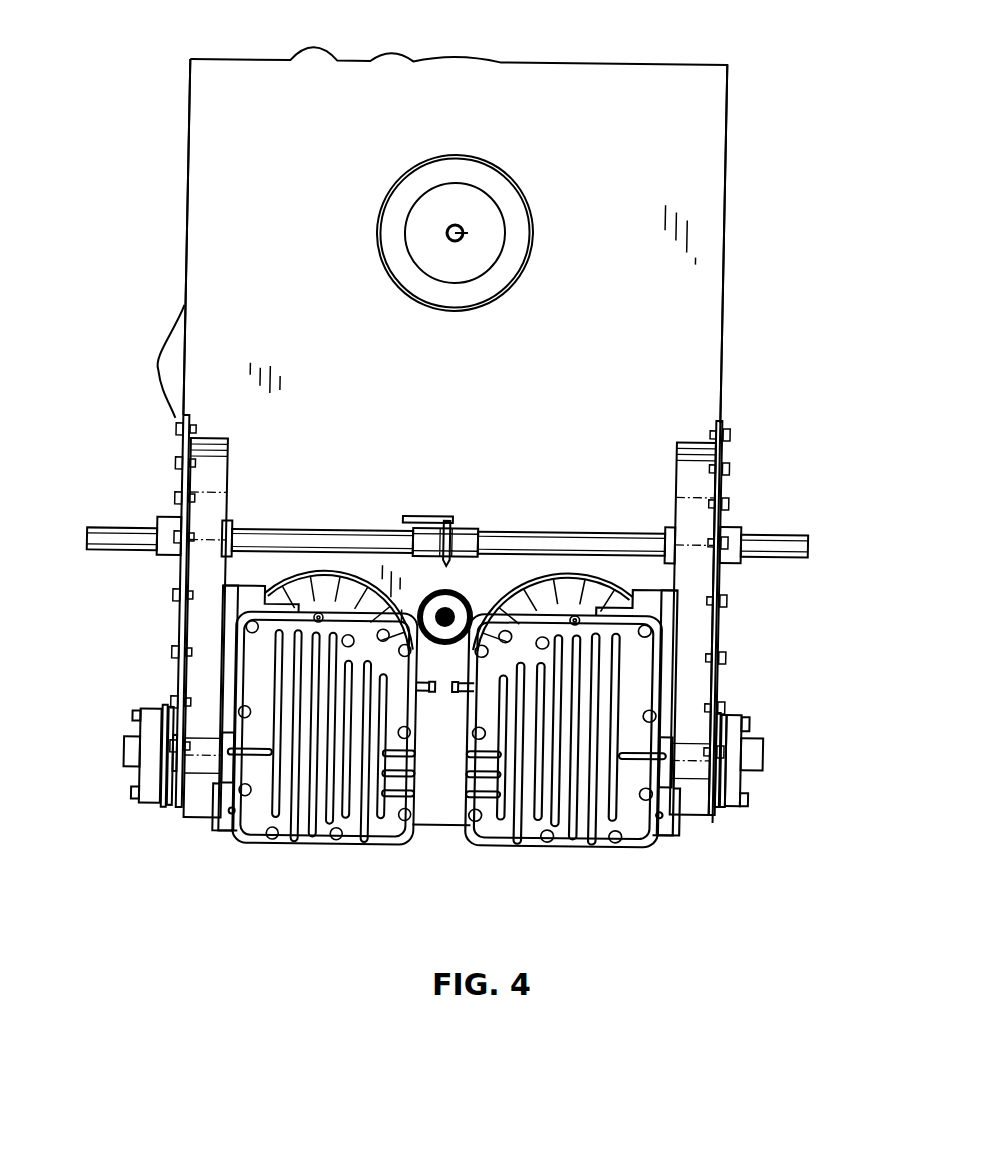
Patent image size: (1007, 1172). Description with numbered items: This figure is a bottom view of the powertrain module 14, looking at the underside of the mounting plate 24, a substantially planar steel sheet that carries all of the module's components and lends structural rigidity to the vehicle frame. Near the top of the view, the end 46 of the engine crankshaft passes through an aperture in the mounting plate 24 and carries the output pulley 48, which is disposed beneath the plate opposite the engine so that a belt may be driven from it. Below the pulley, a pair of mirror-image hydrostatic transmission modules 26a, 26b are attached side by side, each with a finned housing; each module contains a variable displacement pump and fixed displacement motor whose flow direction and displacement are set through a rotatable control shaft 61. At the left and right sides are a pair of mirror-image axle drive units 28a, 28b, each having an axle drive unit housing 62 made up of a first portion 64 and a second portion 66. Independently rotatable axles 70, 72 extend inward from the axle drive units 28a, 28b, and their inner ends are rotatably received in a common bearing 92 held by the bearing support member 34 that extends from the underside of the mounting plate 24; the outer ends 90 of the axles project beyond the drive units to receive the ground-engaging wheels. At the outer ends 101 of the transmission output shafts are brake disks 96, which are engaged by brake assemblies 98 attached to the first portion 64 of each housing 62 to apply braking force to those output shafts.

The powertrain module 14 is at (150, 98).
The mounting plate 24 is at (438, 437).
The output pulley 48 is at (454, 233).
The end of the crankshaft 46 is at (457, 233).
The axle drive unit housing 62 is at (450, 630).
The first portion 64 is at (450, 590).
The second portion 66 is at (450, 626).
The axle drive unit 28a is at (186, 433).
The axle drive unit 28b is at (719, 440).
The outer ends of axles 90 is at (448, 540).
The axle 70 is at (322, 541).
The axle 72 is at (571, 544).
The bearing 92 is at (446, 542).
The bearing support member 34 is at (427, 541).
The control shaft 61 is at (445, 687).
The hydrostatic transmission module 26a is at (315, 707).
The hydrostatic transmission module 26b is at (574, 709).
The brake assembly 98 is at (440, 758).
The brake disk 96 is at (441, 759).
The outer ends of the output shafts 101 is at (444, 752).